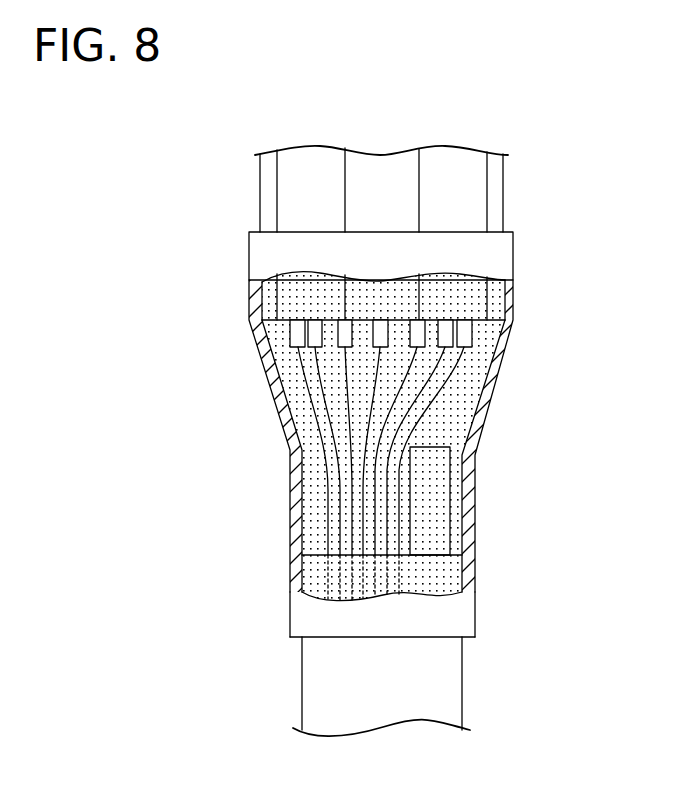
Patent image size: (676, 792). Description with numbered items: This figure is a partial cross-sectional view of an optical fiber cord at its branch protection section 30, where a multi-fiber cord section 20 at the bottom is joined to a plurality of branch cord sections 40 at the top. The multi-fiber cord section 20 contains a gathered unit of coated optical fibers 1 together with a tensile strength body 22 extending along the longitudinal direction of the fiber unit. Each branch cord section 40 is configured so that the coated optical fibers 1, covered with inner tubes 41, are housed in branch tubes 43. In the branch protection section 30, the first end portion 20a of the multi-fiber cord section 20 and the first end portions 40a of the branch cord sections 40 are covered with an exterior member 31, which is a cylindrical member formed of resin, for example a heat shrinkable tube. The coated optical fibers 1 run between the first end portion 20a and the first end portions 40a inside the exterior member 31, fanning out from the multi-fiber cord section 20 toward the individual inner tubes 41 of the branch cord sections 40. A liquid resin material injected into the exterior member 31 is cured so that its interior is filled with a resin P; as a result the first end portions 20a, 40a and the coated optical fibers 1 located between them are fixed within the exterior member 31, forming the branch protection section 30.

The branch cord sections 40 is at (457, 201).
The branch tubes 43 is at (475, 298).
The first end portions 40a is at (270, 310).
The inner tubes 41 is at (290, 333).
The coated optical fibers 1 is at (318, 397).
The branch protection section 30 is at (538, 341).
The resin P is at (462, 388).
The tensile strength body 22 is at (430, 501).
The first end portion 20a is at (458, 578).
The exterior member 31 is at (435, 617).
The multi-fiber cord section 20 is at (283, 682).